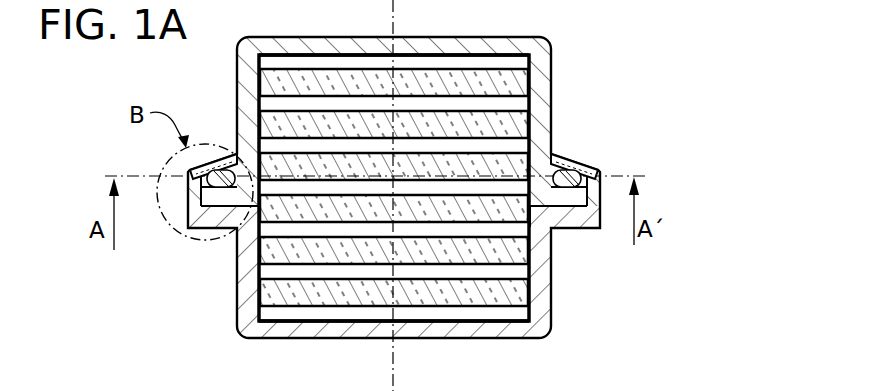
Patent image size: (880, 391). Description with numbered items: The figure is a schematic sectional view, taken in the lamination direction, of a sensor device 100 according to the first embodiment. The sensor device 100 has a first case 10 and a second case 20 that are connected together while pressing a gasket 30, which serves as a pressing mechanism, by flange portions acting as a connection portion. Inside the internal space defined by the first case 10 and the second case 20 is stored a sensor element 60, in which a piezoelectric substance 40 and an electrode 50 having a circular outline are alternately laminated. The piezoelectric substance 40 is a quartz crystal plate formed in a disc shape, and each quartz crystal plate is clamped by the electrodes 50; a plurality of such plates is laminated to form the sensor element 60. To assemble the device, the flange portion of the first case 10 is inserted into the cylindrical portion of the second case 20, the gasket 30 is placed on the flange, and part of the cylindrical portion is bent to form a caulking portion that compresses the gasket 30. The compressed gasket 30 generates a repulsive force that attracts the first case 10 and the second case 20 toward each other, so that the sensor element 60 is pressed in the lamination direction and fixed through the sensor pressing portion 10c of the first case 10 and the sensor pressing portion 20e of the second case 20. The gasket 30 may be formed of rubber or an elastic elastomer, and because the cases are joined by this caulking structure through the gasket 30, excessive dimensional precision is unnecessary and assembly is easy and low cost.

The sensor device 100 is at (464, 187).
The first case 10 is at (543, 78).
The sensor pressing portion 10c is at (397, 68).
The second case 20 is at (540, 322).
The sensor pressing portion 20e is at (388, 308).
The gasket 30 is at (582, 168).
The piezoelectric substance 40 is at (350, 252).
The electrode 50 is at (463, 313).
The sensor element 60 is at (550, 167).